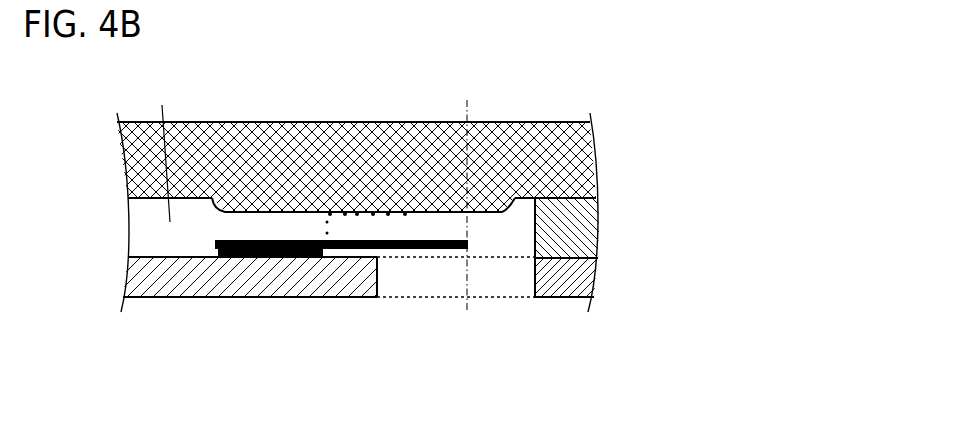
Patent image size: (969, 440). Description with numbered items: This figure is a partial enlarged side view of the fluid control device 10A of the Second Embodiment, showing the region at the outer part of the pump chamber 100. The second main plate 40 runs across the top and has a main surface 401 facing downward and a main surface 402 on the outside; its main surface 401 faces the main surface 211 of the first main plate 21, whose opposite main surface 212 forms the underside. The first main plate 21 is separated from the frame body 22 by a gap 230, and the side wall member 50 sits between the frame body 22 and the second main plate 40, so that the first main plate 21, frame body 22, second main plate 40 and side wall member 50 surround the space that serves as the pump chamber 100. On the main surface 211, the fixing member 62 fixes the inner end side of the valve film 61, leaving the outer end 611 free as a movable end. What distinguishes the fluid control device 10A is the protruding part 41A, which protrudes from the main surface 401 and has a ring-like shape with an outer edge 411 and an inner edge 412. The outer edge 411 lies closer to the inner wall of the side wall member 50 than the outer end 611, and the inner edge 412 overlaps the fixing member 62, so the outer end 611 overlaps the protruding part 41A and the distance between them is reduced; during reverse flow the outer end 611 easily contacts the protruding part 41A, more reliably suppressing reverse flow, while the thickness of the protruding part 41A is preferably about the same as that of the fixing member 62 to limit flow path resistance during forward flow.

The fluid control device 10A is at (582, 108).
The second main plate 40 is at (577, 160).
The main surface 401 is at (128, 218).
The main surface 402 is at (134, 118).
The pump chamber 100 is at (160, 153).
The inner edge 412 is at (213, 199).
The protruding part 41A is at (430, 204).
The outer edge 411 is at (518, 200).
The side wall member 50 is at (598, 226).
The frame body 22 is at (598, 276).
The first main plate 21 is at (137, 277).
The main surface 211 is at (145, 257).
The main surface 212 is at (143, 297).
The valve film 61 is at (370, 212).
The fixing member 62 is at (262, 257).
The outer end 611 is at (468, 242).
The gap 230 is at (518, 278).